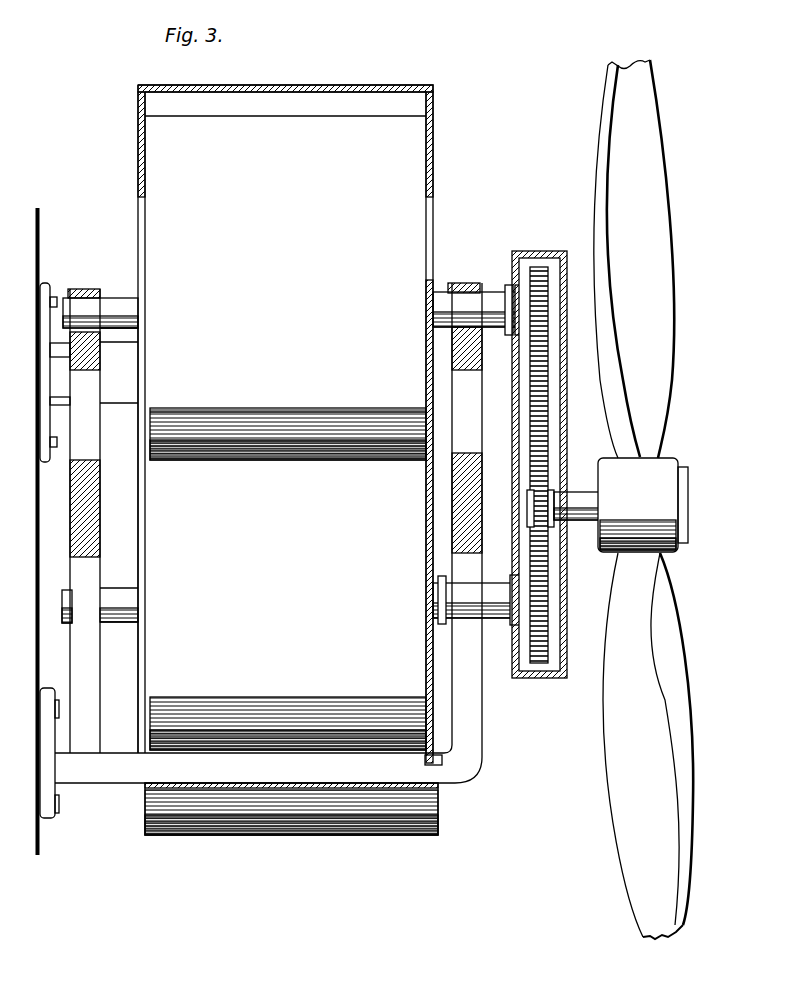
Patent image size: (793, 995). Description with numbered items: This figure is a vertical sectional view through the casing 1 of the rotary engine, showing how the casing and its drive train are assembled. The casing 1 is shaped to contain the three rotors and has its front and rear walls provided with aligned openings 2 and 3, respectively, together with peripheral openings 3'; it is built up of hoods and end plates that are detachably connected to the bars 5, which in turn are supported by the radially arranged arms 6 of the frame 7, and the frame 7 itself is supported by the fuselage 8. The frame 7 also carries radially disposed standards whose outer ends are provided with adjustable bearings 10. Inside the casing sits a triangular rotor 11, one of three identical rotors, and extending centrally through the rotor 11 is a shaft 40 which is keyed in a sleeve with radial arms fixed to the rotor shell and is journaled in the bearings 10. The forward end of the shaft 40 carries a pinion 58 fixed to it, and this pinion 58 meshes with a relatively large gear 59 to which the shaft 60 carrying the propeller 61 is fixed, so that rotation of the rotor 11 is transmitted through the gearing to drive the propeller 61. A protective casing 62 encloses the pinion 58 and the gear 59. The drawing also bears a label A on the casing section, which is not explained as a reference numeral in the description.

The casing 1 is at (432, 140).
The opening 2 is at (433, 245).
The opening 3 is at (121, 169).
The peripheral opening 3' is at (309, 90).
The bar 5 is at (107, 777).
The arm 6 is at (97, 708).
The frame 7 is at (128, 785).
The fuselage 8 is at (35, 835).
The adjustable bearing 10 is at (100, 298).
The triangular rotor 11 is at (285, 172).
The shaft 40 is at (115, 335).
The pinion 58 is at (540, 270).
The gear 59 is at (548, 450).
The shaft 60 is at (575, 490).
The propeller 61 is at (620, 777).
The protective casing 62 is at (560, 602).
The drum A is at (425, 835).